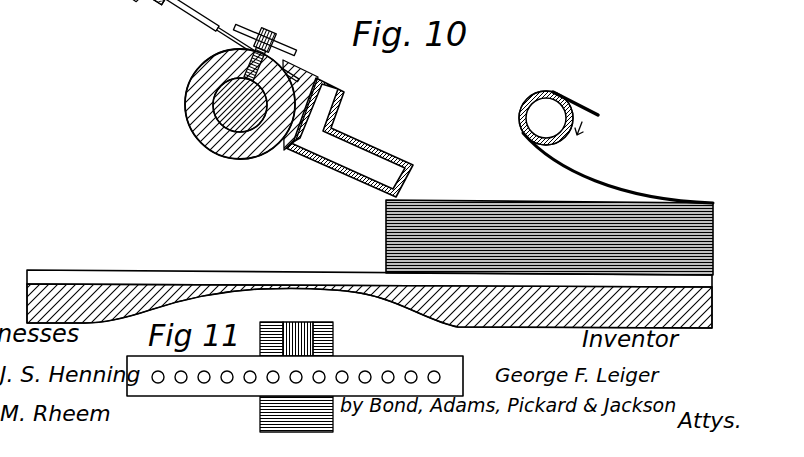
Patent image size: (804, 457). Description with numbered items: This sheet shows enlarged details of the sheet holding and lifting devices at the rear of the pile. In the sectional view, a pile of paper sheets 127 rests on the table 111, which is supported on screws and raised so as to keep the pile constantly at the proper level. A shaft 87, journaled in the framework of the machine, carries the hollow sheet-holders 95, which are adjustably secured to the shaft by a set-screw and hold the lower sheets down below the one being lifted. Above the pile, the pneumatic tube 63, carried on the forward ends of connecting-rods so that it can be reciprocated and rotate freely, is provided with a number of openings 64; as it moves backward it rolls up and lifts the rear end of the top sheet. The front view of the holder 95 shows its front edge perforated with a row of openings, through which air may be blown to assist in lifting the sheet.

In FIG. 10, the pneumatic tube 63 is at (541, 141).
In FIG. 10, the openings 64 is at (555, 93).
In FIG. 10, the shaft 87 is at (226, 103).
In FIG. 10, the holders 95 is at (368, 143).
In FIG. 11, the holders 95 is at (392, 363).
In FIG. 10, the table 111 is at (515, 307).
In FIG. 10, the pile of paper sheets 127 is at (505, 210).